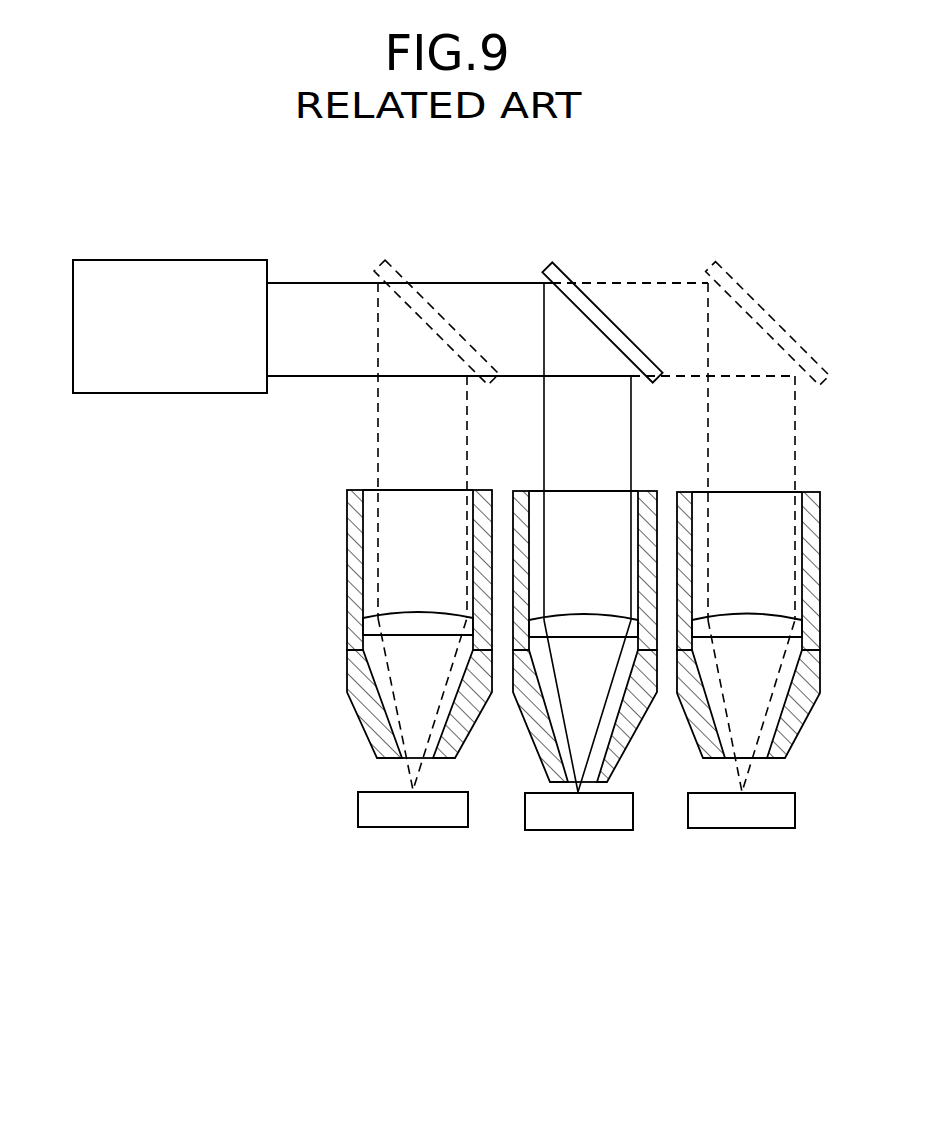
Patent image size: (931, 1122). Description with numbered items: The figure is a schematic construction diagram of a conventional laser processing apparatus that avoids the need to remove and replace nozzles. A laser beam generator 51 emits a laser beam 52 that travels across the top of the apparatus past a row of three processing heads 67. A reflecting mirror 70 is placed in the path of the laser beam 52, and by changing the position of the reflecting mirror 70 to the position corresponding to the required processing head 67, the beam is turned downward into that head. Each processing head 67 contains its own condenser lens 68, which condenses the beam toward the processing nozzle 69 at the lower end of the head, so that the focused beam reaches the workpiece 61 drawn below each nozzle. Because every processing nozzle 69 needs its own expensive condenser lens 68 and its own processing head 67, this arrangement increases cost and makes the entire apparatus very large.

The laser beam generator 51 is at (178, 360).
The laser beam 52 is at (308, 375).
The reflecting mirror 70 is at (578, 308).
The processing head 67 is at (355, 530).
The condenser lens 68 is at (398, 627).
The processing nozzle 69 is at (373, 737).
The workpiece 61 is at (410, 812).